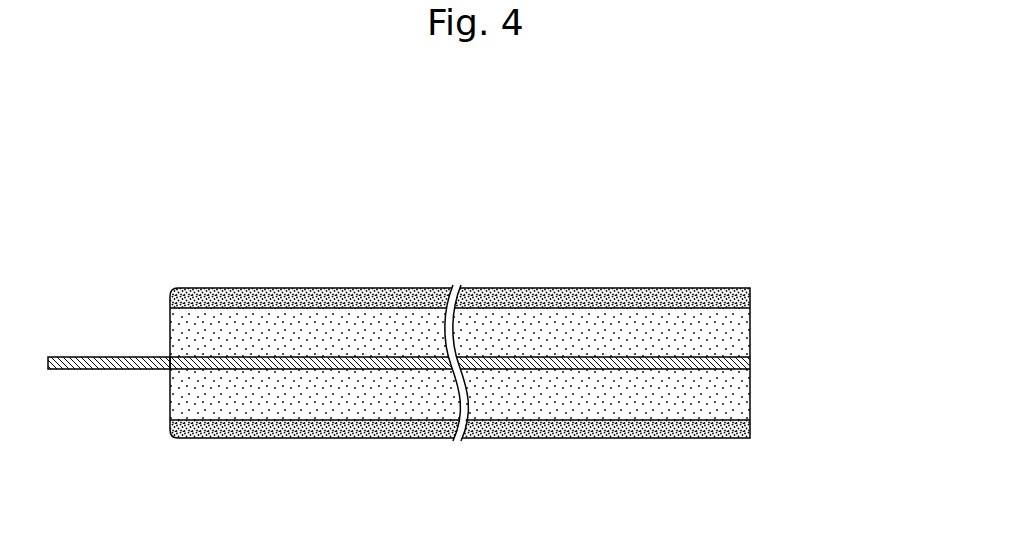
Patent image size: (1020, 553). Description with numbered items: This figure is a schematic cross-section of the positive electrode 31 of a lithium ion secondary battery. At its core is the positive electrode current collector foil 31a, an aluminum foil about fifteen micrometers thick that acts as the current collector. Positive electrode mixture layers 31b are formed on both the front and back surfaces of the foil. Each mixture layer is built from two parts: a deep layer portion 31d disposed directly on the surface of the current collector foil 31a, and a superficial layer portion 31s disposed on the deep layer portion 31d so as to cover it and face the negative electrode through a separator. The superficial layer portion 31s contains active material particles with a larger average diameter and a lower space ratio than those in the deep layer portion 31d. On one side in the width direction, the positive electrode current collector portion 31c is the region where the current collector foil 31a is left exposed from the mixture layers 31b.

The positive electrode 31 is at (474, 292).
The positive electrode current collector foil 31a is at (460, 363).
The positive electrode mixture layers 31b is at (460, 363).
The positive electrode current collector portion 31c is at (112, 345).
The deep layer portion 31d is at (460, 364).
The superficial layer portion 31s is at (460, 363).